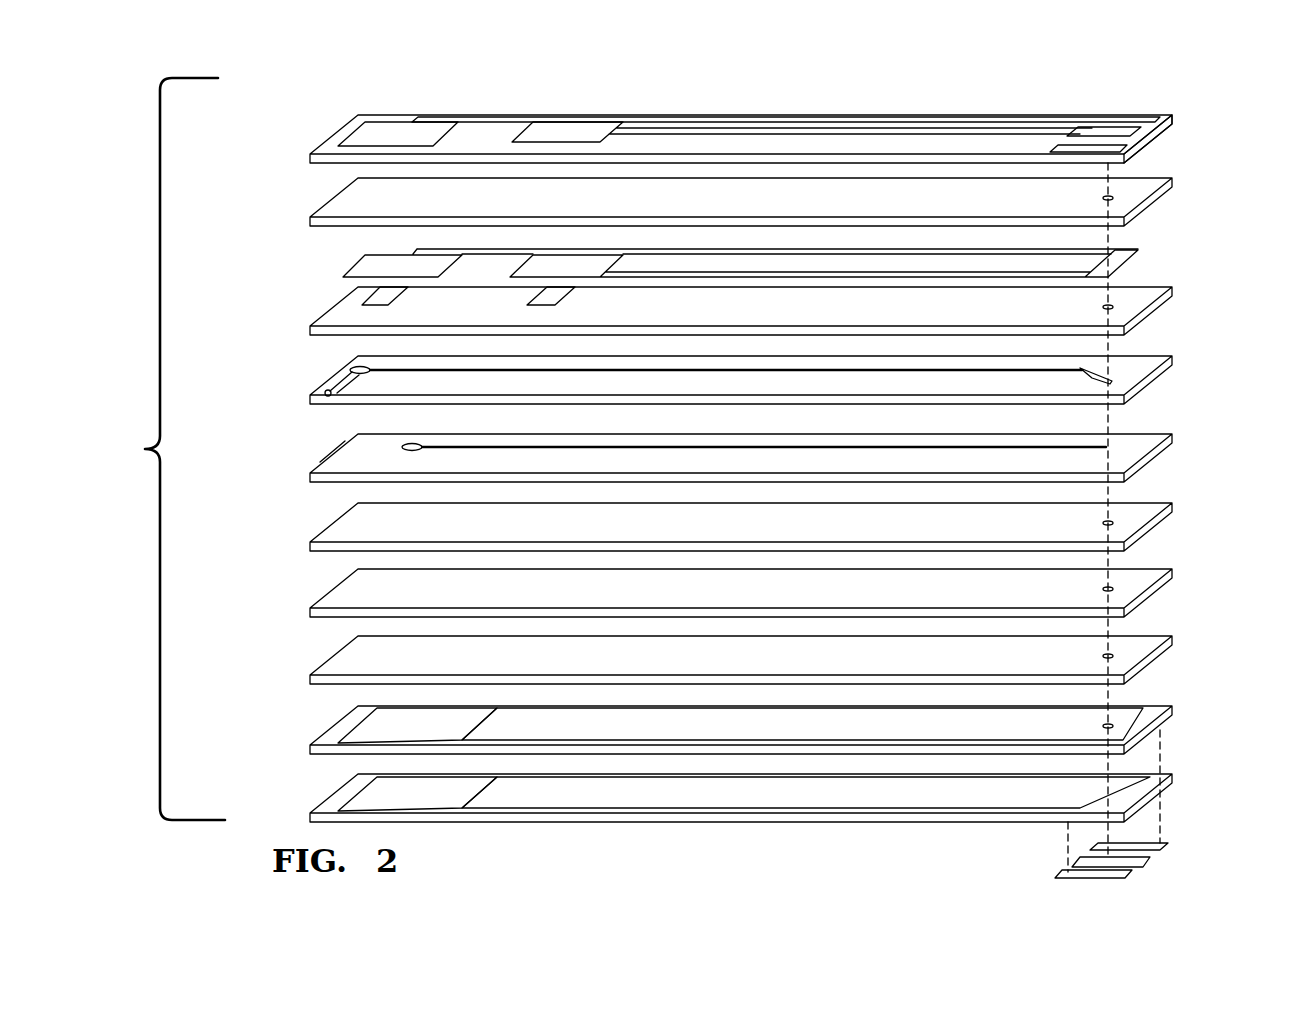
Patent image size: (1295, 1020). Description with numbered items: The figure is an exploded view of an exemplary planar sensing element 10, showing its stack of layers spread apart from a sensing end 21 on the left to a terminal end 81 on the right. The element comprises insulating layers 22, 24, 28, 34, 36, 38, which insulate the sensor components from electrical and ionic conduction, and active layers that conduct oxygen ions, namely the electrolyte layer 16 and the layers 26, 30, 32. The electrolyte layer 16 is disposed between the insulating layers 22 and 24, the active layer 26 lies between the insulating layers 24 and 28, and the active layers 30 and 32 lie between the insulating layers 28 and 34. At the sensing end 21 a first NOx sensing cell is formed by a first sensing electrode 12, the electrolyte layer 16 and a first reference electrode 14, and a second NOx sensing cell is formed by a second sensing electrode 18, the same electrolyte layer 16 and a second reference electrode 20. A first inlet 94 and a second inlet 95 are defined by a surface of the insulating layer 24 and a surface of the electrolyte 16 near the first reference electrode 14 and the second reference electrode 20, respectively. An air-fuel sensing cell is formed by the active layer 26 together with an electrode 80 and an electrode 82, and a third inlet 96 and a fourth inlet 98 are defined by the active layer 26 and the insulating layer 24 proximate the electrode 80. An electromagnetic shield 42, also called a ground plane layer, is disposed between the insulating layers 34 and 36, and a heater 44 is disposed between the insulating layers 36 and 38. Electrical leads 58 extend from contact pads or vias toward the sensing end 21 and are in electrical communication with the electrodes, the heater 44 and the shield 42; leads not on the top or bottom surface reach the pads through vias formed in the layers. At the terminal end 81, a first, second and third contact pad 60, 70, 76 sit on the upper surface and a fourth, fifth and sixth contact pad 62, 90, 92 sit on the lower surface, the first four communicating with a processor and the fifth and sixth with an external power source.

The sensing element 10 is at (169, 449).
The first sensing electrode 12 is at (350, 140).
The first reference electrode 14 is at (347, 275).
The electrolyte layer 16 is at (1140, 197).
The second sensing electrode 18 is at (590, 125).
The second reference electrode 20 is at (597, 255).
The sensing end 21 is at (333, 92).
The insulating layer 22 is at (953, 117).
The insulating layer 24 is at (1146, 290).
The active layer 26 is at (1148, 362).
The insulating layer 28 is at (1153, 437).
The active layer 30 is at (1147, 517).
The active layer 32 is at (1147, 583).
The insulating layer 34 is at (1147, 650).
The insulating layer 36 is at (1147, 720).
The insulating layer 38 is at (1147, 790).
The electromagnetic shield 42 is at (358, 722).
The heater 44 is at (358, 792).
The electrical leads 58 is at (480, 118).
The first contact pad 60 is at (1145, 116).
The fourth contact pad 62 is at (1120, 866).
The second contact pad 70 is at (1093, 133).
The third contact pad 76 is at (1098, 143).
The electrode 80 is at (350, 369).
The terminal end 81 is at (1212, 115).
The electrode 82 is at (402, 444).
The fifth contact pad 90 is at (1108, 873).
The sixth contact pad 92 is at (1143, 847).
The first inlet 94 is at (367, 302).
The second inlet 95 is at (548, 295).
The third inlet 96 is at (324, 397).
The fourth inlet 98 is at (335, 463).